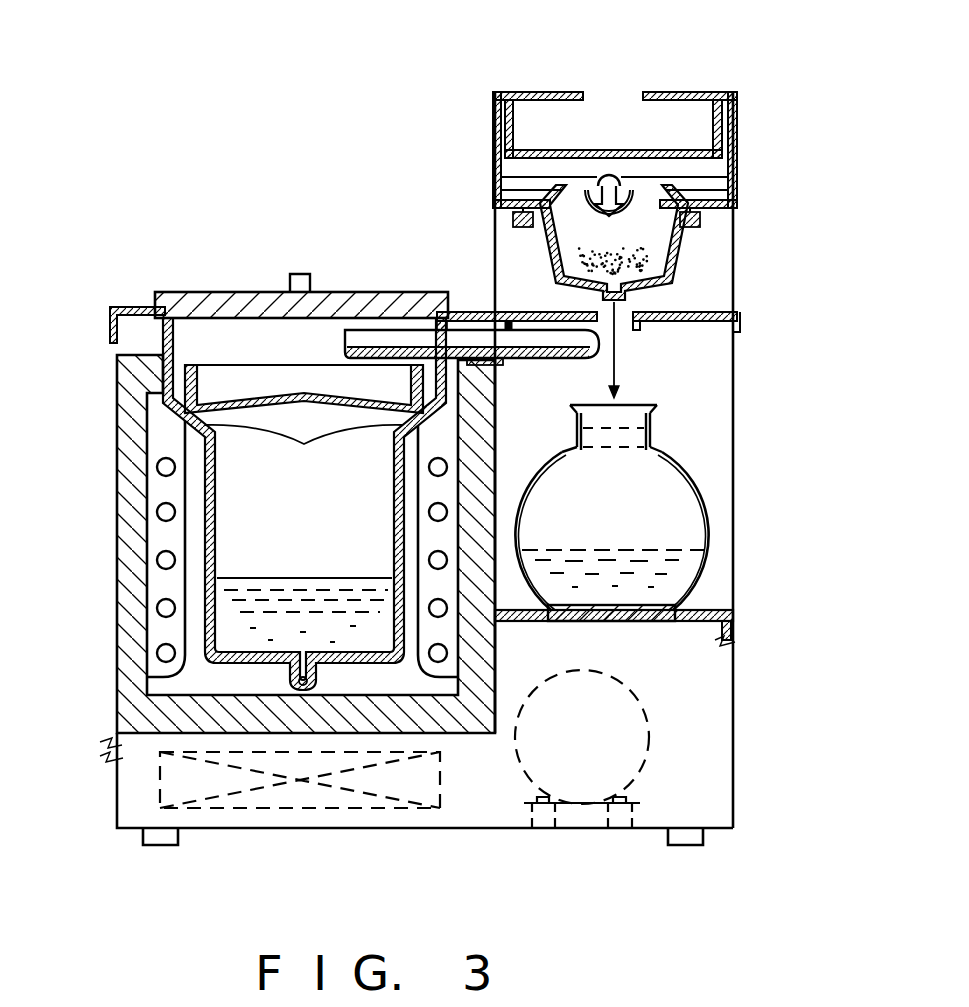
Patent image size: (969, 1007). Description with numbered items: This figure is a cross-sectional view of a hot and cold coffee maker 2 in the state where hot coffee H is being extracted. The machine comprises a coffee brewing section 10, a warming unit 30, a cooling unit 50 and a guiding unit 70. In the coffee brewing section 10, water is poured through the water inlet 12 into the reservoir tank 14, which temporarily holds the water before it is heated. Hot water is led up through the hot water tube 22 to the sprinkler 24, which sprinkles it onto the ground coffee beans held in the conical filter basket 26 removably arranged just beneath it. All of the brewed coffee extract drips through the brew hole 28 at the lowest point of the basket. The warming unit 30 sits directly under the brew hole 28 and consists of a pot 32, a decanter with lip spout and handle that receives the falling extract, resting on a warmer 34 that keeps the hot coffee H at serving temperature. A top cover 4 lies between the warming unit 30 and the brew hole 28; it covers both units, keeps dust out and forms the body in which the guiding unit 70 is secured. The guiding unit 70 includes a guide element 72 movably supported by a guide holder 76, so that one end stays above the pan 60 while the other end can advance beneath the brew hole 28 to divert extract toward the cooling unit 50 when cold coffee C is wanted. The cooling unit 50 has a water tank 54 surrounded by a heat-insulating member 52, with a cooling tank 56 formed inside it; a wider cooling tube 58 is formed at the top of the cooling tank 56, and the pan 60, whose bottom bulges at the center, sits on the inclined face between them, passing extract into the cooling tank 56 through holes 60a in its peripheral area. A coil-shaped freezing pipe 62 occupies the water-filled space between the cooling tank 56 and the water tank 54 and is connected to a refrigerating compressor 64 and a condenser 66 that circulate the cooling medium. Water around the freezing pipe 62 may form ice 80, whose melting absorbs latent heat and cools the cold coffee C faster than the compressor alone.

The hot and cold coffee maker 2 is at (740, 788).
The top cover 4 is at (470, 312).
The coffee brewing section 10 is at (518, 256).
The water inlet 12 is at (601, 97).
The reservoir tank 14 is at (708, 130).
The hot water tube 22 is at (616, 172).
The sprinkler 24 is at (606, 250).
The filter basket 26 is at (680, 262).
The brew hole 28 is at (632, 304).
The warming unit 30 is at (703, 422).
The pot 32 is at (706, 498).
The warmer 34 is at (680, 606).
The cooling unit 50 is at (112, 700).
The heat-insulating member 52 is at (150, 519).
The water tank 54 is at (165, 421).
The cooling tank 56 is at (210, 478).
The cooling tube 58 is at (118, 358).
The pan 60 is at (266, 363).
The holes 60a is at (304, 449).
The freezing pipe 62 is at (155, 612).
The refrigerating compressor 64 is at (650, 702).
The condenser 66 is at (160, 790).
The guiding unit 70 is at (352, 308).
The guide element 72 is at (526, 360).
The guide holder 76 is at (507, 366).
The ice 80 is at (165, 540).
The cold coffee C is at (305, 590).
The hot coffee H is at (682, 576).